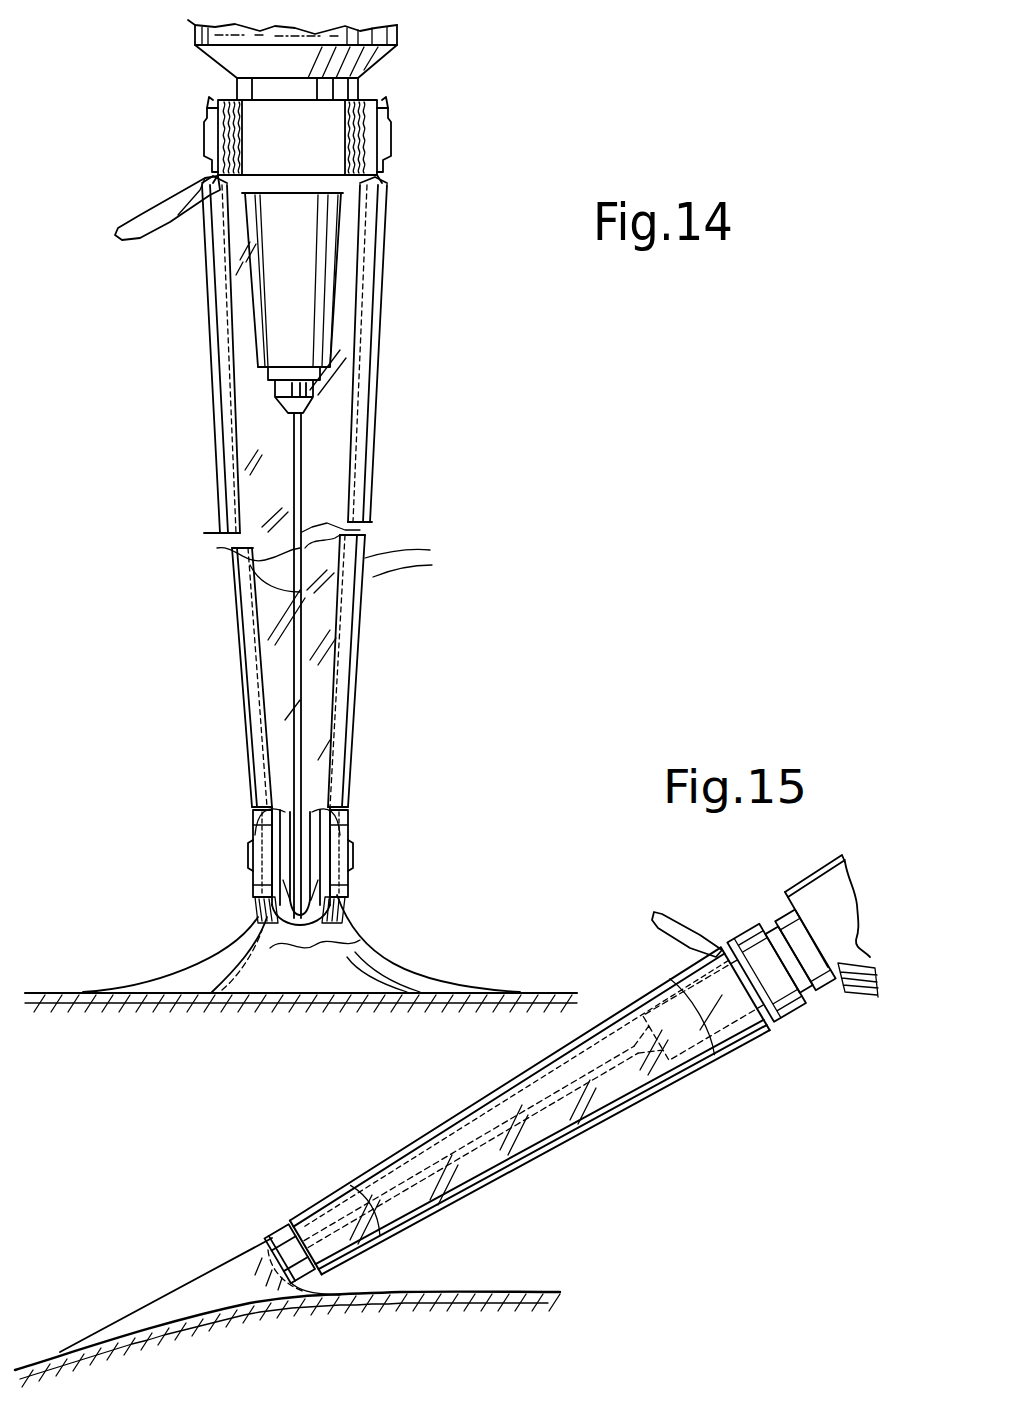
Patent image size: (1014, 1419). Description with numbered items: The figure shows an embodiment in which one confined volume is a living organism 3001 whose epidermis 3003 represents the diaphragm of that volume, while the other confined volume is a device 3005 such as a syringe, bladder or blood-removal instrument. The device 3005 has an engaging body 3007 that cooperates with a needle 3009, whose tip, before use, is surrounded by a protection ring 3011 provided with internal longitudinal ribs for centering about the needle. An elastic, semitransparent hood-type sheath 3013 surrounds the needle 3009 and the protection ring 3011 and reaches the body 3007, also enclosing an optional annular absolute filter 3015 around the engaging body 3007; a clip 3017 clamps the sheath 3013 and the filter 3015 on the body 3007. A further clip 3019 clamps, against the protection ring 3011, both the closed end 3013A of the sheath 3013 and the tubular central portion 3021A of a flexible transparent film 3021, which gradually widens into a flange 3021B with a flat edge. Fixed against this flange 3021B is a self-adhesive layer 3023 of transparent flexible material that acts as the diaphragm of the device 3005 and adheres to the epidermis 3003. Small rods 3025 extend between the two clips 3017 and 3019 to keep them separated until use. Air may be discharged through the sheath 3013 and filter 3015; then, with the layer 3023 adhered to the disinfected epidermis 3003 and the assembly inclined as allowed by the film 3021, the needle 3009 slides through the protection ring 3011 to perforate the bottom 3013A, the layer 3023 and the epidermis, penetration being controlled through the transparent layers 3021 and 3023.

In FIG. 14, the living organism 3001 is at (92, 1012).
In FIG. 15, the living organism 3001 is at (538, 1275).
In FIG. 14, the epidermis 3003 is at (37, 992).
In FIG. 15, the epidermis 3003 is at (462, 1300).
In FIG. 14, the device 3005 is at (402, 41).
In FIG. 15, the device 3005 is at (818, 859).
In FIG. 14, the engaging body 3007 is at (337, 318).
In FIG. 15, the engaging body 3007 is at (694, 1015).
In FIG. 14, the needle 3009 is at (290, 490).
In FIG. 15, the needle 3009 is at (587, 1128).
In FIG. 14, the protection ring 3011 is at (253, 797).
In FIG. 14, the hood-type sheath 3013 is at (350, 520).
In FIG. 15, the hood-type sheath 3013 is at (538, 1145).
In FIG. 14, the closed end of the hood-type sheath 3013A is at (303, 935).
In FIG. 14, the annular absolute filter 3015 is at (365, 200).
In FIG. 14, the clip 3017 is at (388, 138).
In FIG. 15, the clip 3017 is at (787, 1027).
In FIG. 14, the further clip 3019 is at (347, 867).
In FIG. 15, the further clip 3019 is at (280, 1238).
In FIG. 14, the flexible and transparent film 3021 is at (212, 960).
In FIG. 15, the flexible and transparent film 3021 is at (172, 1292).
In FIG. 14, the tubular central portion 3021A is at (258, 910).
In FIG. 14, the flange 3021B is at (397, 975).
In FIG. 14, the layer of transparent flexible material 3023 is at (217, 1000).
In FIG. 15, the layer of transparent flexible material 3023 is at (67, 1347).
In FIG. 14, the small rods 3025 is at (375, 415).
In FIG. 15, the small rods 3025 is at (408, 1225).